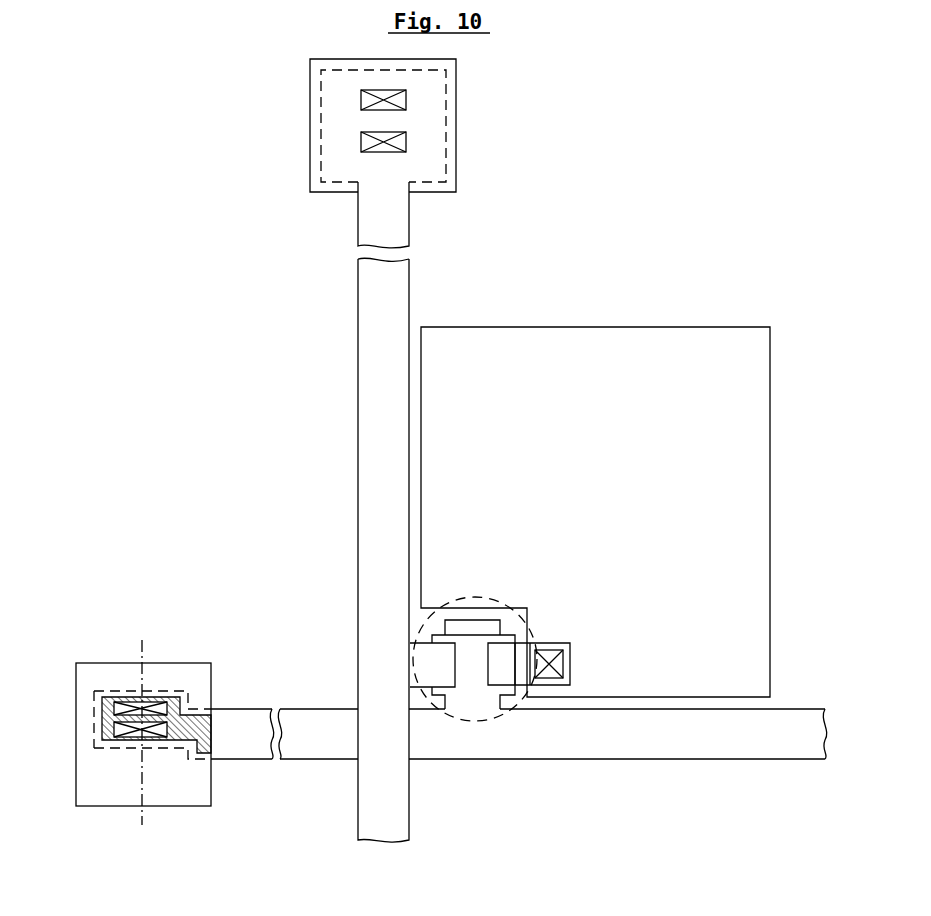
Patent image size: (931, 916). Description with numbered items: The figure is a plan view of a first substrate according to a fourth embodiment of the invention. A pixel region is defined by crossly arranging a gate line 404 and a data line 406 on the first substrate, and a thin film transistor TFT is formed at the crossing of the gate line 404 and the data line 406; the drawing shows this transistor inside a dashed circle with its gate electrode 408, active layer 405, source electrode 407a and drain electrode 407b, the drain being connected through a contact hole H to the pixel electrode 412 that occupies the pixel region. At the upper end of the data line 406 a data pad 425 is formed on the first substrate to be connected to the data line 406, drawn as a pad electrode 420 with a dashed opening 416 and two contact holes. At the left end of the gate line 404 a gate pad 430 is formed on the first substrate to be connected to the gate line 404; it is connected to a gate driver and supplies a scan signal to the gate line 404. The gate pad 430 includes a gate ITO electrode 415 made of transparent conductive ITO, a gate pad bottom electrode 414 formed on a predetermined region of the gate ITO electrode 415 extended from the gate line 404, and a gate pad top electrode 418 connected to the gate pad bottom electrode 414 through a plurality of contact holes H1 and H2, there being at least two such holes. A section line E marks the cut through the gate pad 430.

The data pad 420 is at (456, 97).
The data pad insulating opening 416 is at (446, 133).
The data pad 425 is at (478, 176).
The data line 406 is at (400, 300).
The pixel electrode 412 is at (755, 528).
The gate line 404 is at (672, 745).
The thin film transistor TFT is at (510, 717).
The gate electrode 408 is at (478, 690).
The active layer 405 is at (472, 627).
The source electrode 407a is at (443, 660).
The drain electrode 407b is at (503, 650).
The drain contact hole H is at (563, 663).
The gate pad top electrode 418 is at (167, 663).
The gate pad bottom electrode 414 is at (94, 715).
The gate ITO electrode 415 is at (210, 740).
The contact hole H1 is at (132, 700).
The contact hole H2 is at (122, 740).
The section line E-E' E is at (142, 735).
The gate pad 430 is at (195, 818).